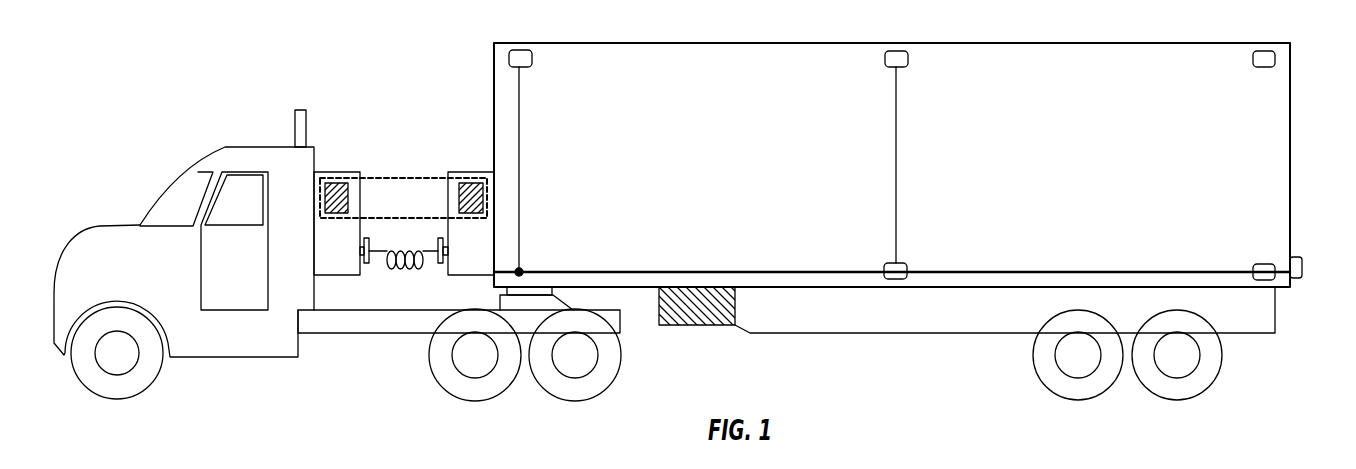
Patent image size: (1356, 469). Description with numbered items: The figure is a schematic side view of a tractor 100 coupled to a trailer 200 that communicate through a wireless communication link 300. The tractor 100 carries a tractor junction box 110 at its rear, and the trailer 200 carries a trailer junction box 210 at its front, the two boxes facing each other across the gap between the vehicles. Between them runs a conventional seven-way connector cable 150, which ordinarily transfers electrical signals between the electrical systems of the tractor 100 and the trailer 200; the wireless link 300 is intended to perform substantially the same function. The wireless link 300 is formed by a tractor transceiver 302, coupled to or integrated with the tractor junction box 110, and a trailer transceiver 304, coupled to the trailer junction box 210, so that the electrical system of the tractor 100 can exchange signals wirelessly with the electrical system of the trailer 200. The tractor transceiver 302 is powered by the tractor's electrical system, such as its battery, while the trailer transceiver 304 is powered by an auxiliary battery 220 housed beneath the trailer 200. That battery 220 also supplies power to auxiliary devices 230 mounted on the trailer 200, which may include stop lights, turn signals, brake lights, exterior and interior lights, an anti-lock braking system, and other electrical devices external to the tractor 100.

The tractor 100 is at (113, 225).
The tractor junction box 110 is at (327, 245).
The 7-way connector cable 150 is at (410, 270).
The trailer 200 is at (977, 43).
The trailer junction box 210 is at (472, 245).
The battery 220 is at (700, 325).
The auxiliary devices 230 is at (897, 58).
The wireless communication link 300 is at (403, 178).
The tractor transceiver 302 is at (337, 180).
The trailer transceiver 304 is at (470, 180).